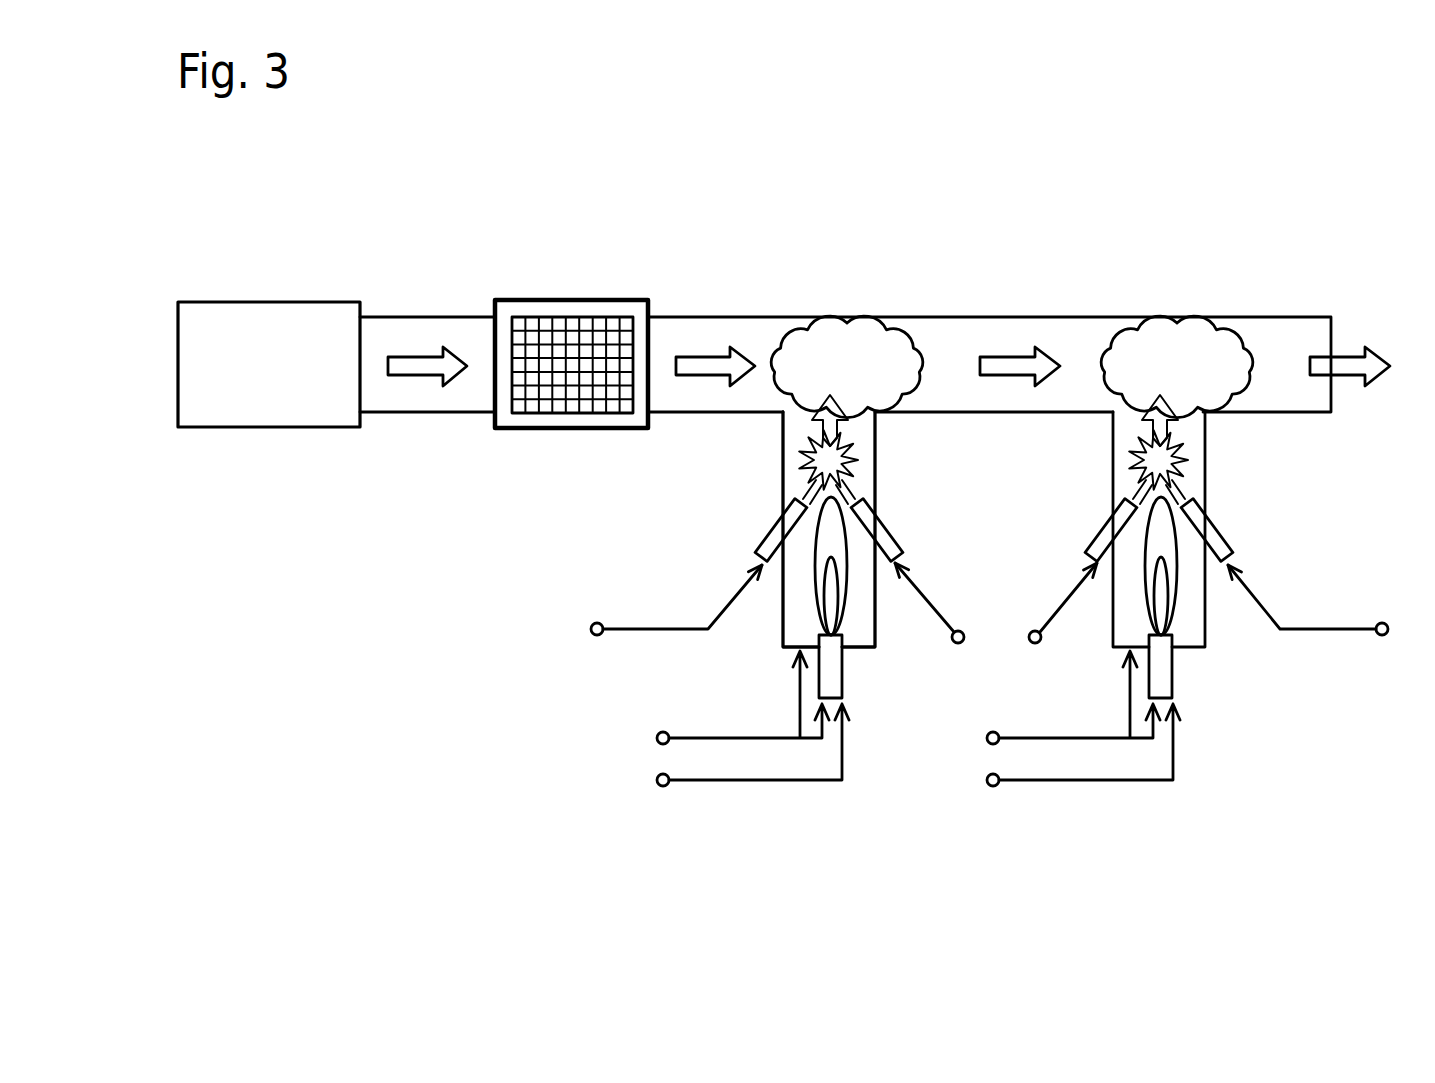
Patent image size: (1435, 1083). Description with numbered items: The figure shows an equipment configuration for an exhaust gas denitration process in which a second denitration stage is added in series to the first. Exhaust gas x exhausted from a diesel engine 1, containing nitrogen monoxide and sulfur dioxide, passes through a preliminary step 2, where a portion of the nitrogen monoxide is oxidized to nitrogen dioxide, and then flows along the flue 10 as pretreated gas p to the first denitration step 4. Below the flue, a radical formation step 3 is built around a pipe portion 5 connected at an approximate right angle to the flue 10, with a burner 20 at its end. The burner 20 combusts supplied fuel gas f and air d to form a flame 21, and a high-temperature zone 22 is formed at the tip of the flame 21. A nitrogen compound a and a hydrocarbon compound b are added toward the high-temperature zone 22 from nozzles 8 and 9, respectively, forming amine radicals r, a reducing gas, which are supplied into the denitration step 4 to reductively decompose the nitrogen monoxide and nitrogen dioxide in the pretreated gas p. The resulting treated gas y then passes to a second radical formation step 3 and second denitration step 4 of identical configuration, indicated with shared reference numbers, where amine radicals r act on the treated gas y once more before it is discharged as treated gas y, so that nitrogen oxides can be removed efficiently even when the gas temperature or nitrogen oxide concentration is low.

The diesel engine 1 is at (288, 302).
The preliminary step 2 is at (618, 300).
The radical formation step 3 is at (672, 505).
The denitration step 4 is at (845, 333).
The pipe portion 5 is at (783, 456).
The nozzle 8 is at (760, 534).
The nozzle 9 is at (896, 546).
The flue 10 is at (771, 325).
The burner 20 is at (838, 683).
The flame 21 is at (815, 592).
The high-temperature zone 22 is at (856, 461).
The amine radicals r is at (841, 428).
The exhaust gas x is at (425, 357).
The pretreated gas p is at (708, 357).
The treated gas y is at (1007, 363).
The nitrogen compound a is at (591, 629).
The hydrocarbon compound b is at (1405, 590).
The air d is at (657, 738).
The fuel gas f is at (657, 780).